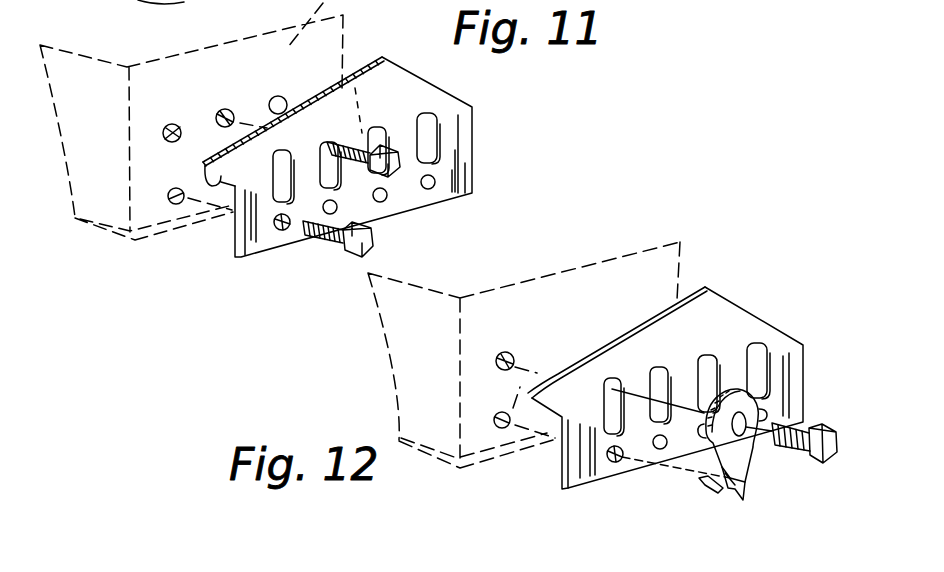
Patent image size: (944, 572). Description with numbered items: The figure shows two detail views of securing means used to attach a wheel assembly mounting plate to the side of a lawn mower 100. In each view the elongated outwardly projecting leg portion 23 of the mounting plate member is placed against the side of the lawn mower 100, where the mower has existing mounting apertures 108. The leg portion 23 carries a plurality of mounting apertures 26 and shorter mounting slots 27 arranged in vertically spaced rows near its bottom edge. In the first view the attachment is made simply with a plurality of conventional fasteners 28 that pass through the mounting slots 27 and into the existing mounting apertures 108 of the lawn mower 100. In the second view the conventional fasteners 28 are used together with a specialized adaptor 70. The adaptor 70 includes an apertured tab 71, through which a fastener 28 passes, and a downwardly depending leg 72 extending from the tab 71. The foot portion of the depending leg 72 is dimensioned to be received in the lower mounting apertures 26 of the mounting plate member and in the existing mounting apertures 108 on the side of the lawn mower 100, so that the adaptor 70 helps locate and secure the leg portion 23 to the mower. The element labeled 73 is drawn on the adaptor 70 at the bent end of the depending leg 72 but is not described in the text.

In FIG. 11, the elongated outwardly projecting leg portion 23 is at (337, 151).
In FIG. 11, the mounting slots 27 is at (333, 150).
In FIG. 12, the mounting slots 27 is at (619, 379).
In FIG. 11, the conventional fasteners 28 is at (388, 173).
In FIG. 12, the conventional fasteners 28 is at (834, 443).
In FIG. 11, the mounting apertures 26 is at (280, 230).
In FIG. 12, the mounting apertures 26 is at (614, 463).
In FIG. 11, the existing mounting apertures 108 is at (213, 110).
In FIG. 12, the existing mounting apertures 108 is at (521, 352).
In FIG. 12, the lawn mower 100 is at (597, 305).
In FIG. 12, the specialized adaptor 70 is at (749, 445).
In FIG. 12, the apertured tab 71 is at (740, 393).
In FIG. 12, the downwardly depending leg 72 is at (743, 500).
In FIG. 12, the bent tab 73 is at (710, 481).